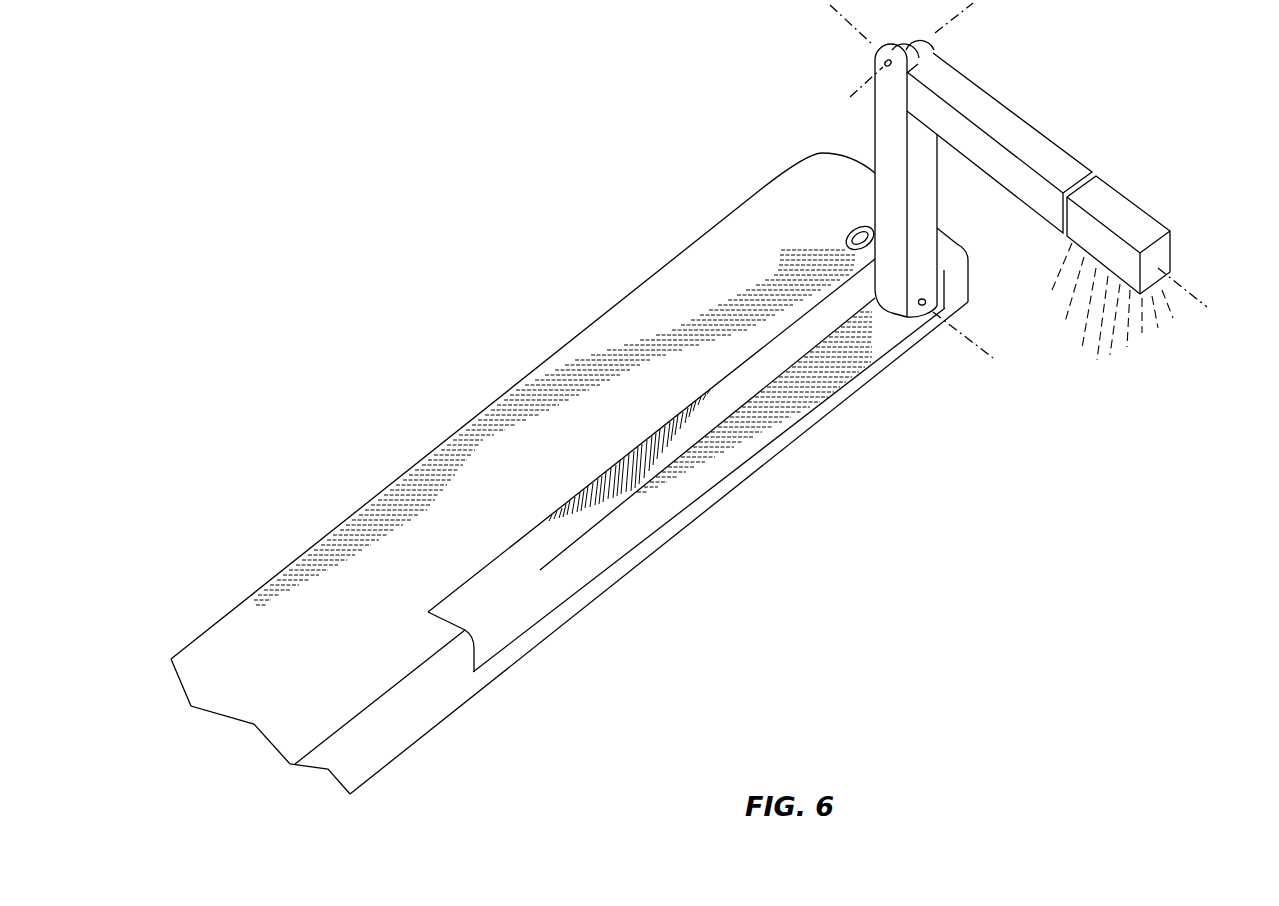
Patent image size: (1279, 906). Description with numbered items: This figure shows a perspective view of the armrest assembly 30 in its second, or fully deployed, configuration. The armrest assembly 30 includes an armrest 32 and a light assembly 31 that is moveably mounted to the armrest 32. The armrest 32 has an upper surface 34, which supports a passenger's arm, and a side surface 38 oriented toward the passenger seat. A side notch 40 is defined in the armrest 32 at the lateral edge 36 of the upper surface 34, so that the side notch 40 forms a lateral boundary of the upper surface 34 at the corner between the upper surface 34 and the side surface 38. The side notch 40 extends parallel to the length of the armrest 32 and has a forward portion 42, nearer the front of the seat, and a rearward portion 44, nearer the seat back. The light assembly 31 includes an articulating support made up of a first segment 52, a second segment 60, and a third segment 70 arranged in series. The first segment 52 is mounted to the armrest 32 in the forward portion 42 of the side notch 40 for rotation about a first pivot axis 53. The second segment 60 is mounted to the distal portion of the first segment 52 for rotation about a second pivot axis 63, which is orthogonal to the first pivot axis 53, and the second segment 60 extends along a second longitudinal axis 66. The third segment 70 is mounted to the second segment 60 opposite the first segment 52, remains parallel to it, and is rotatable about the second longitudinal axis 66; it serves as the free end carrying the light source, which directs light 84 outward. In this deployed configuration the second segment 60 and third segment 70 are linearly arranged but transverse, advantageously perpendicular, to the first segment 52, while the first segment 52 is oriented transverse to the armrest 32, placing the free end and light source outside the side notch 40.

The armrest assembly 30 is at (400, 187).
The light assembly 31 is at (918, 232).
The armrest 32 is at (762, 222).
The upper surface 34 is at (574, 448).
The lateral edge 36 is at (520, 540).
The side surface 38 is at (383, 736).
The side notch 40 is at (660, 500).
The forward portion 42 is at (880, 320).
The rearward portion 44 is at (490, 632).
The first segment 52 is at (890, 153).
The first pivot axis 53 is at (980, 344).
The second segment 60 is at (1021, 135).
The second pivot axis 63 is at (957, 22).
The second longitudinal axis 66 is at (1190, 294).
The third segment 70 is at (1128, 212).
The light 84 is at (1110, 333).